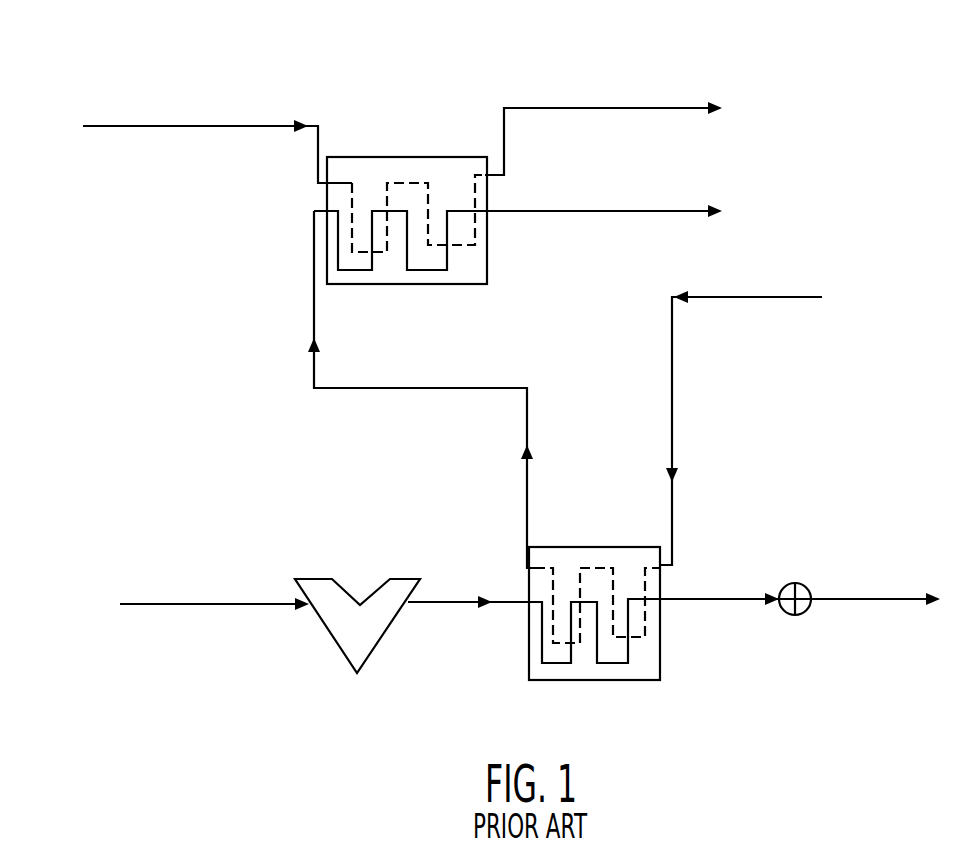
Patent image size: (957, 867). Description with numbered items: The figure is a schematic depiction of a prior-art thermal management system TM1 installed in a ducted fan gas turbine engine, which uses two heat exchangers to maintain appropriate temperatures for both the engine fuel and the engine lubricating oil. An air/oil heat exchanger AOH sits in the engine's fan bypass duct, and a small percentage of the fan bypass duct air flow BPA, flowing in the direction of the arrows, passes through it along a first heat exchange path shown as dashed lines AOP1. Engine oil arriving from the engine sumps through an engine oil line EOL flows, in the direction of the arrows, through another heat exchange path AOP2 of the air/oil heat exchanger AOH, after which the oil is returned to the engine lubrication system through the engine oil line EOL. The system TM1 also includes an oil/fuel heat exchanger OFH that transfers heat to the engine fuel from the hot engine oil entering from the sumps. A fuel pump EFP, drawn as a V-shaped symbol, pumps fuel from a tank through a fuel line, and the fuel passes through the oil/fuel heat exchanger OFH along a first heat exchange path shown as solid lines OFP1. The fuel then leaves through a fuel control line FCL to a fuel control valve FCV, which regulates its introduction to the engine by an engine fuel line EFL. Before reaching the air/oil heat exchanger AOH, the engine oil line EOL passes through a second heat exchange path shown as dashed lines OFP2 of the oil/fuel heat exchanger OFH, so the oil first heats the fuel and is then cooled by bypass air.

The thermal management system TM1 is at (194, 246).
The fan bypass duct air flow BPA is at (193, 126).
The air/oil heat exchanger AOH is at (455, 156).
The first heat exchange path AOP1 is at (351, 182).
The second heat exchange path AOP2 is at (434, 270).
The engine oil line EOL is at (622, 211).
The oil/fuel heat exchanger OFH is at (533, 672).
The first heat exchange path OFP1 is at (617, 663).
The second heat exchange path OFP2 is at (550, 568).
The fuel pump EFP is at (342, 640).
The fuel control line FCL is at (725, 599).
The fuel control valve FCV is at (801, 613).
The engine fuel line EFL is at (860, 599).